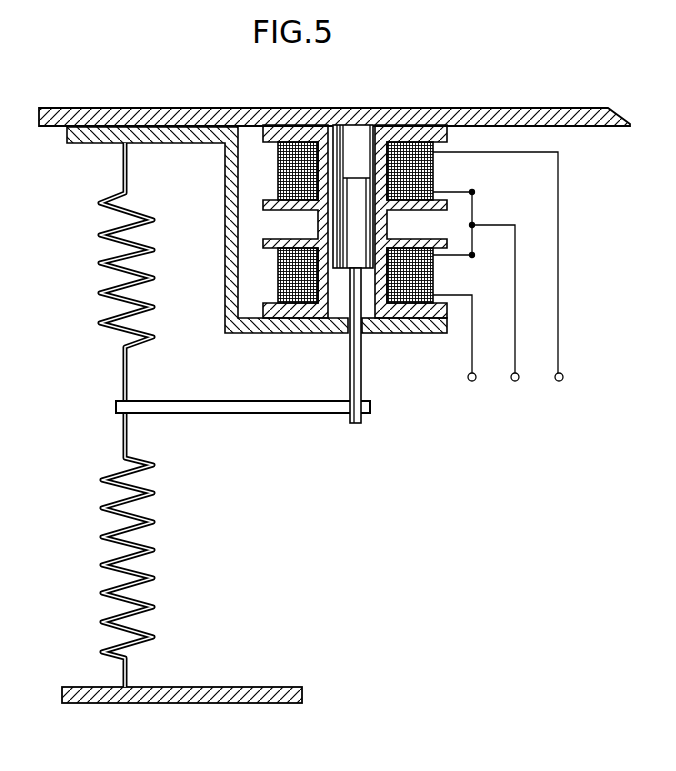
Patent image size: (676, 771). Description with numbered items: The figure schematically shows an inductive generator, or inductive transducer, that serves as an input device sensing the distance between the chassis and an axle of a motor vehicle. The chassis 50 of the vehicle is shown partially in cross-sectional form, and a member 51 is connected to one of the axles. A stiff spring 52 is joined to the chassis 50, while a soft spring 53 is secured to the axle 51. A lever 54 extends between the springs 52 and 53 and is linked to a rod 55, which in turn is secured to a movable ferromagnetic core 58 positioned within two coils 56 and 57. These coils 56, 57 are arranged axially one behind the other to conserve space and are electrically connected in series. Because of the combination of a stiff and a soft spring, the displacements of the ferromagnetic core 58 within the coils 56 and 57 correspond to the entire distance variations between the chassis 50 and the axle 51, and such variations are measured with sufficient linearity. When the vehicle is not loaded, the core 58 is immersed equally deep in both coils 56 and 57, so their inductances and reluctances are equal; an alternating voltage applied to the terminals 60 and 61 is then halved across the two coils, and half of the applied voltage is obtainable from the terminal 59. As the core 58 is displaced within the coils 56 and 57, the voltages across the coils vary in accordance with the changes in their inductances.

The chassis 50 is at (535, 115).
The member 51 is at (250, 695).
The stiff spring 52 is at (102, 264).
The soft spring 53 is at (106, 545).
The lever 54 is at (232, 404).
The rod 55 is at (361, 377).
The coil 56 is at (436, 177).
The coil 57 is at (436, 283).
The movable ferromagnetic core 58 is at (345, 215).
The terminal 59 is at (481, 305).
The terminal 60 is at (459, 357).
The terminal 61 is at (503, 285).